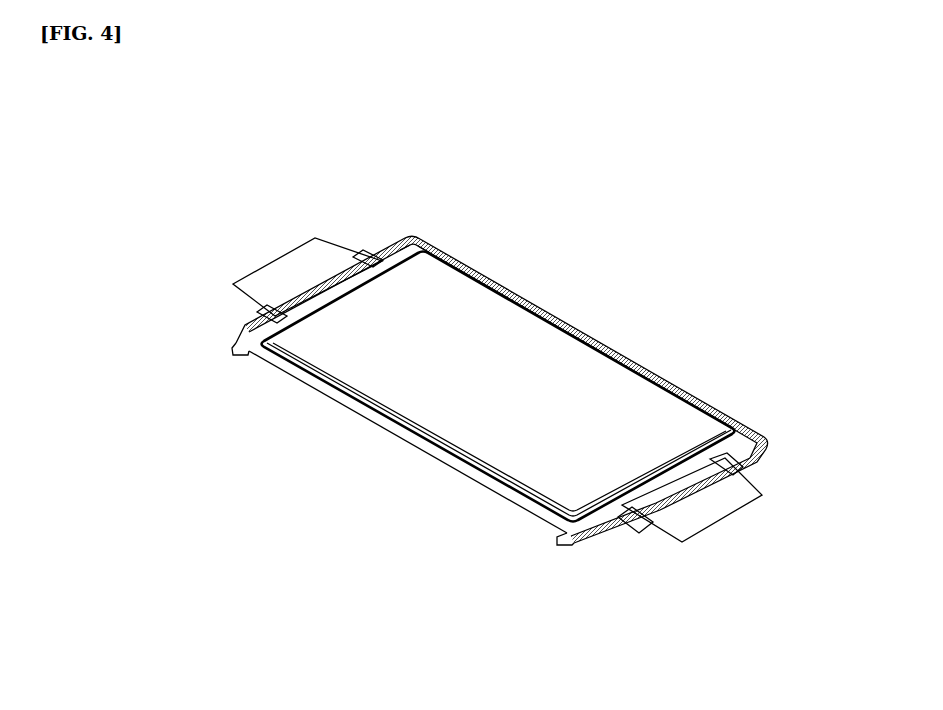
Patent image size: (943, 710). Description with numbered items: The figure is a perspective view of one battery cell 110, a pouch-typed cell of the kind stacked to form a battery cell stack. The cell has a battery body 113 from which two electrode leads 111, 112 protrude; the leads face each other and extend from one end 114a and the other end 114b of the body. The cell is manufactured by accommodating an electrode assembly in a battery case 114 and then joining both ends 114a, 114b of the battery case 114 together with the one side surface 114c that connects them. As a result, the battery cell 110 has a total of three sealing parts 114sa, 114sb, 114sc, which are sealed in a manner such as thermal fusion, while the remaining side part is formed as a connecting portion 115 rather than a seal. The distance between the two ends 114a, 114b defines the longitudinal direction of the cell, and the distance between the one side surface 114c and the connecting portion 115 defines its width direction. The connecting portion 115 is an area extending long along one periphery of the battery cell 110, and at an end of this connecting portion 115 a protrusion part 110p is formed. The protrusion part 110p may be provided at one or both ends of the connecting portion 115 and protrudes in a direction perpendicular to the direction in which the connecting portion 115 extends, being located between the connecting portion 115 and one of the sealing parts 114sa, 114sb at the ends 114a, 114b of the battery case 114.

The battery cell 110 is at (192, 139).
The protrusion part 110p is at (235, 343).
The electrode lead 111 is at (288, 268).
The electrode lead 112 is at (727, 517).
The battery body 113 is at (507, 327).
The battery case 114 is at (756, 423).
The one end 114a is at (399, 252).
The other end 114b is at (597, 530).
The one side surface 114c is at (598, 340).
The sealing part 114sa is at (378, 252).
The sealing part 114sb is at (749, 457).
The sealing part 114sc is at (687, 392).
The connecting portion 115 is at (430, 452).